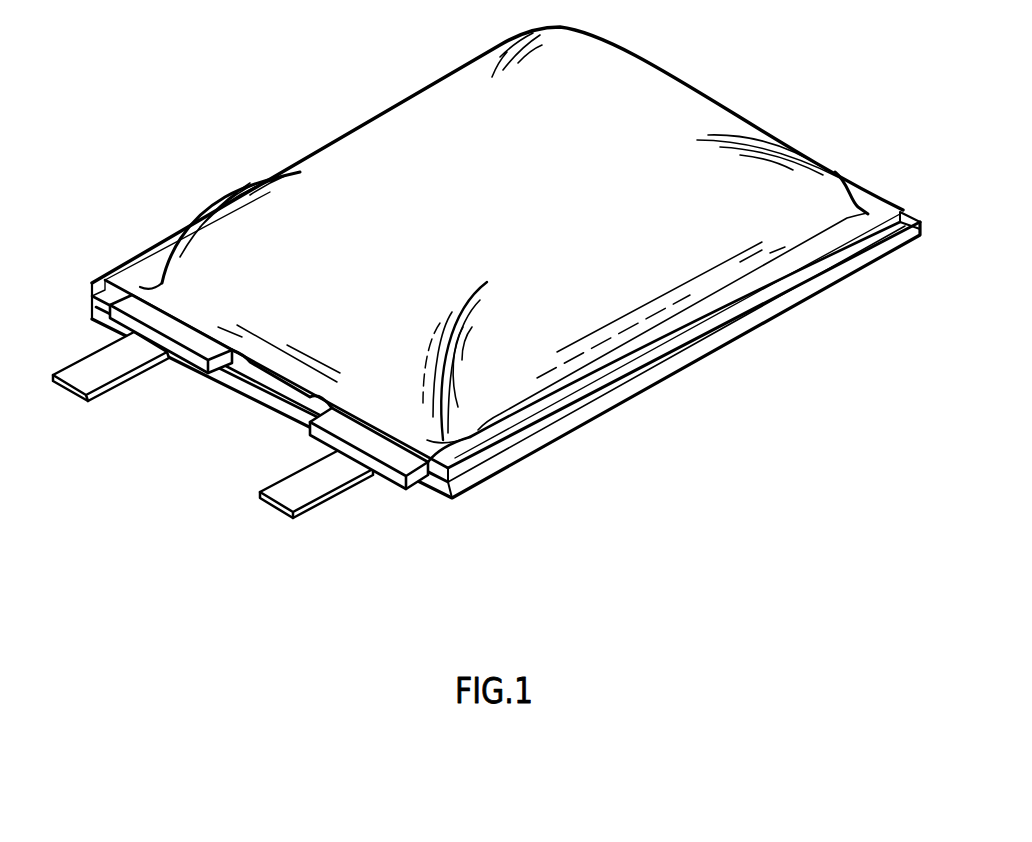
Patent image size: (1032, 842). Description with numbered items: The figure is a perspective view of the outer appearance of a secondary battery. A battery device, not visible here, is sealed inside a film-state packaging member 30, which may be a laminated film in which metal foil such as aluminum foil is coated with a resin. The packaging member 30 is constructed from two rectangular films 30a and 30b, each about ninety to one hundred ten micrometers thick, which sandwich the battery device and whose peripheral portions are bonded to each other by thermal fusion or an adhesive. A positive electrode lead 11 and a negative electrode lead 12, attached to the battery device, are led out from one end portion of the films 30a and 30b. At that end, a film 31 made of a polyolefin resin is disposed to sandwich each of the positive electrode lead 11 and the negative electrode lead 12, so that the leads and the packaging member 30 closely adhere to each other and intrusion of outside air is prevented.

The positive electrode lead 11 is at (73, 377).
The negative electrode lead 12 is at (275, 488).
The packaging member 30 is at (506, 282).
The film 30a is at (566, 418).
The film 30b is at (574, 512).
The film 31 is at (187, 362).